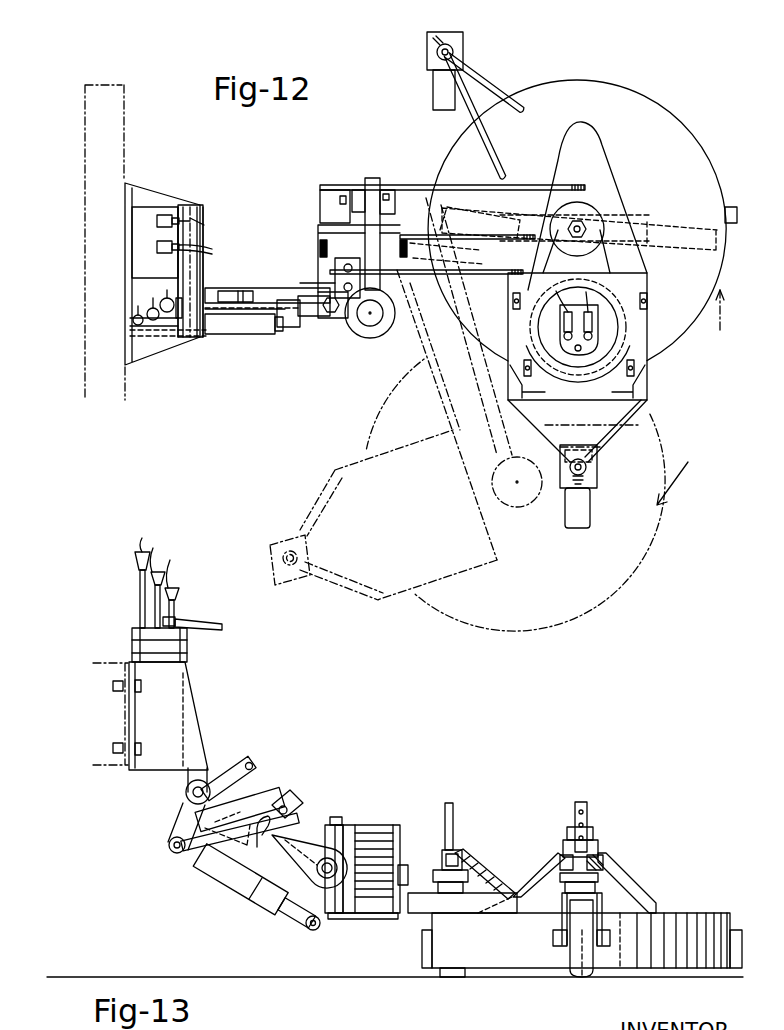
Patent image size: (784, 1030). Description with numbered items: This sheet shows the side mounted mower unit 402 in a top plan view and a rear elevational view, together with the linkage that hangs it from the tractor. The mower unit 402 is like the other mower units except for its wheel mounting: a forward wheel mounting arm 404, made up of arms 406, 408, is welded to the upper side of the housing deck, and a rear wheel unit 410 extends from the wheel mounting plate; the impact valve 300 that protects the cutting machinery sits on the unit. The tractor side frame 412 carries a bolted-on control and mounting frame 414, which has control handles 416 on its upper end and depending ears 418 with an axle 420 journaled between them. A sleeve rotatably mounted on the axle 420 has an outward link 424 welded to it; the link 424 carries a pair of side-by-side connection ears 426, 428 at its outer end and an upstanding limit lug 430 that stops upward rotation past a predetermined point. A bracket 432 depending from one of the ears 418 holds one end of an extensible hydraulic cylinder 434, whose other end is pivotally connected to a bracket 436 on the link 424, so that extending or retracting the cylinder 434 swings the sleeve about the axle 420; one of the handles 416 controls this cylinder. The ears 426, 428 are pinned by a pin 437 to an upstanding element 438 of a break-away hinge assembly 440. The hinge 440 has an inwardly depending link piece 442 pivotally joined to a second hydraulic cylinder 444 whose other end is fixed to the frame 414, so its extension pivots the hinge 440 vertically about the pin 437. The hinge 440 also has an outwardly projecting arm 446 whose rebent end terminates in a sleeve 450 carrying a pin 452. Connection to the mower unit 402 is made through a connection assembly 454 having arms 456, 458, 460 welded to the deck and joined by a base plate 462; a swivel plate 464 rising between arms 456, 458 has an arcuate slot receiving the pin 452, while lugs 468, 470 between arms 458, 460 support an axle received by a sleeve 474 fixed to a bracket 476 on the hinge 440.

In FIG. 12, the impact valve 300 is at (577, 305).
In FIG. 13, the mower unit 402 is at (703, 905).
In FIG. 12, the forward wheel mounting arm 404 is at (475, 65).
In FIG. 13, the forward wheel mounting arm 404 is at (460, 863).
In FIG. 12, the arm 406 is at (523, 100).
In FIG. 12, the arm 408 is at (492, 157).
In FIG. 12, the rear wheel unit 410 is at (645, 426).
In FIG. 13, the rear wheel unit 410 is at (623, 873).
In FIG. 12, the tractor side frame 412 is at (84, 262).
In FIG. 13, the tractor side frame 412 is at (102, 658).
In FIG. 12, the control and mounting frame 414 is at (158, 358).
In FIG. 13, the control and mounting frame 414 is at (172, 702).
In FIG. 12, the control handles 416 is at (165, 308).
In FIG. 13, the control handles 416 is at (143, 552).
In FIG. 12, the depending ears 418 is at (193, 210).
In FIG. 13, the depending ears 418 is at (205, 760).
In FIG. 12, the axle 420 is at (197, 222).
In FIG. 13, the axle 420 is at (232, 768).
In FIG. 12, the outward link 424 is at (210, 290).
In FIG. 13, the outward link 424 is at (240, 806).
In FIG. 12, the connection ear 426 is at (300, 312).
In FIG. 13, the connection ear 426 is at (325, 835).
In FIG. 12, the connection ear 428 is at (307, 282).
In FIG. 12, the limit lug 430 is at (235, 290).
In FIG. 13, the limit lug 430 is at (265, 815).
In FIG. 13, the bracket 432 is at (169, 840).
In FIG. 12, the extensible hydraulic cylinder 434 is at (223, 328).
In FIG. 13, the extensible hydraulic cylinder 434 is at (230, 850).
In FIG. 12, the bracket 436 is at (265, 328).
In FIG. 13, the bracket 436 is at (297, 792).
In FIG. 13, the pin 437 is at (395, 848).
In FIG. 13, the upstanding element 438 is at (353, 837).
In FIG. 13, the break-away hinge assembly 440 is at (396, 805).
In FIG. 12, the link piece 442 is at (203, 246).
In FIG. 13, the link piece 442 is at (322, 920).
In FIG. 13, the second hydraulic cylinder 444 is at (270, 900).
In FIG. 12, the outwardly projecting arm 446 is at (371, 180).
In FIG. 12, the sleeve 450 is at (383, 190).
In FIG. 12, the pin 452 is at (397, 195).
In FIG. 12, the connection assembly 454 is at (336, 186).
In FIG. 12, the arm 456 is at (543, 187).
In FIG. 12, the arm 458 is at (530, 236).
In FIG. 12, the arm 460 is at (500, 283).
In FIG. 13, the arm 460 is at (477, 903).
In FIG. 12, the base plate 462 is at (327, 208).
In FIG. 12, the swivel plate 464 is at (380, 217).
In FIG. 12, the lug 468 is at (334, 312).
In FIG. 12, the lug 470 is at (390, 318).
In FIG. 12, the sleeve 474 is at (320, 240).
In FIG. 12, the bracket 476 is at (366, 328).